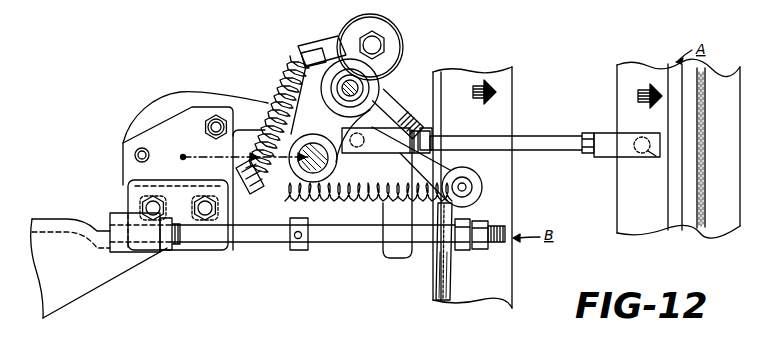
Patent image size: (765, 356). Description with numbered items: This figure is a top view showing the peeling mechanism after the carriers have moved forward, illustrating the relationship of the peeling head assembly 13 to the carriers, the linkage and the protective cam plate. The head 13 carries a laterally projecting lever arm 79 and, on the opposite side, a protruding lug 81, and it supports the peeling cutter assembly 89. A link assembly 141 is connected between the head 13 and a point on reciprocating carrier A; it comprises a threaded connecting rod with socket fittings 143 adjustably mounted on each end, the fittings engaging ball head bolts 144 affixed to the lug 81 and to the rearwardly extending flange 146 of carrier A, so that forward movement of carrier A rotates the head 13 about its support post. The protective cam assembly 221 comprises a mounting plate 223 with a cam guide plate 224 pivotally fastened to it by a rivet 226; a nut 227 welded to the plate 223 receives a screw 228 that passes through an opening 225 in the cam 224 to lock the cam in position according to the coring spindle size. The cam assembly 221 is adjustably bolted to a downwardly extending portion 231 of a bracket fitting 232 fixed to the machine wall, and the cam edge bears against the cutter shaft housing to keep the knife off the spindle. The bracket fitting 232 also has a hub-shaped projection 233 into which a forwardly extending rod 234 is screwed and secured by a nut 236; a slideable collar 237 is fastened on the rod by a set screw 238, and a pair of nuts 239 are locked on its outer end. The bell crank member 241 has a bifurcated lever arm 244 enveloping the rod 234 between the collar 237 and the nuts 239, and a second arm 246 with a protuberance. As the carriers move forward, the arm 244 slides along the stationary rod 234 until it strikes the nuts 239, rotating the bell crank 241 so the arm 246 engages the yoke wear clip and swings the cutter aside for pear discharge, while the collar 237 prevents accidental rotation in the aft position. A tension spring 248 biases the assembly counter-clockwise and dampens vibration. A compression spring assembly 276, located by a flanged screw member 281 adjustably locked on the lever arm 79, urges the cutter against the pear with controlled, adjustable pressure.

The peeling head assembly 13 is at (341, 101).
The laterally projecting lever arm 79 is at (238, 160).
The protruding lug 81 is at (357, 154).
The peeling cutter assembly 89 is at (399, 37).
The link assembly 141 is at (524, 137).
The socket fittings 143 is at (610, 152).
The ball head bolts 144 is at (657, 153).
The rearwardly extending flange 146 is at (625, 199).
The protective cam assembly 221 is at (172, 150).
The mounting plate 223 is at (171, 161).
The cam guide plate 224 is at (158, 104).
The opening 225 is at (217, 115).
The rivet 226 is at (135, 160).
The nut 227 is at (194, 131).
The screw 228 is at (222, 119).
The downwardly extending portion 231 is at (212, 251).
The bracket fitting 232 is at (82, 292).
The hub-shaped projection 233 is at (122, 255).
The forwardly extending rod 234 is at (268, 243).
The nut 236 is at (167, 255).
The slideable collar 237 is at (319, 254).
The set screw 238 is at (298, 243).
The nuts 239 is at (463, 258).
The bell crank member 241 is at (484, 187).
The bifurcated lever arm 244 is at (434, 272).
The second arm 246 is at (445, 140).
The tension spring 248 is at (325, 201).
The compression spring assembly 276 is at (295, 72).
The flanged screw member 281 is at (252, 193).